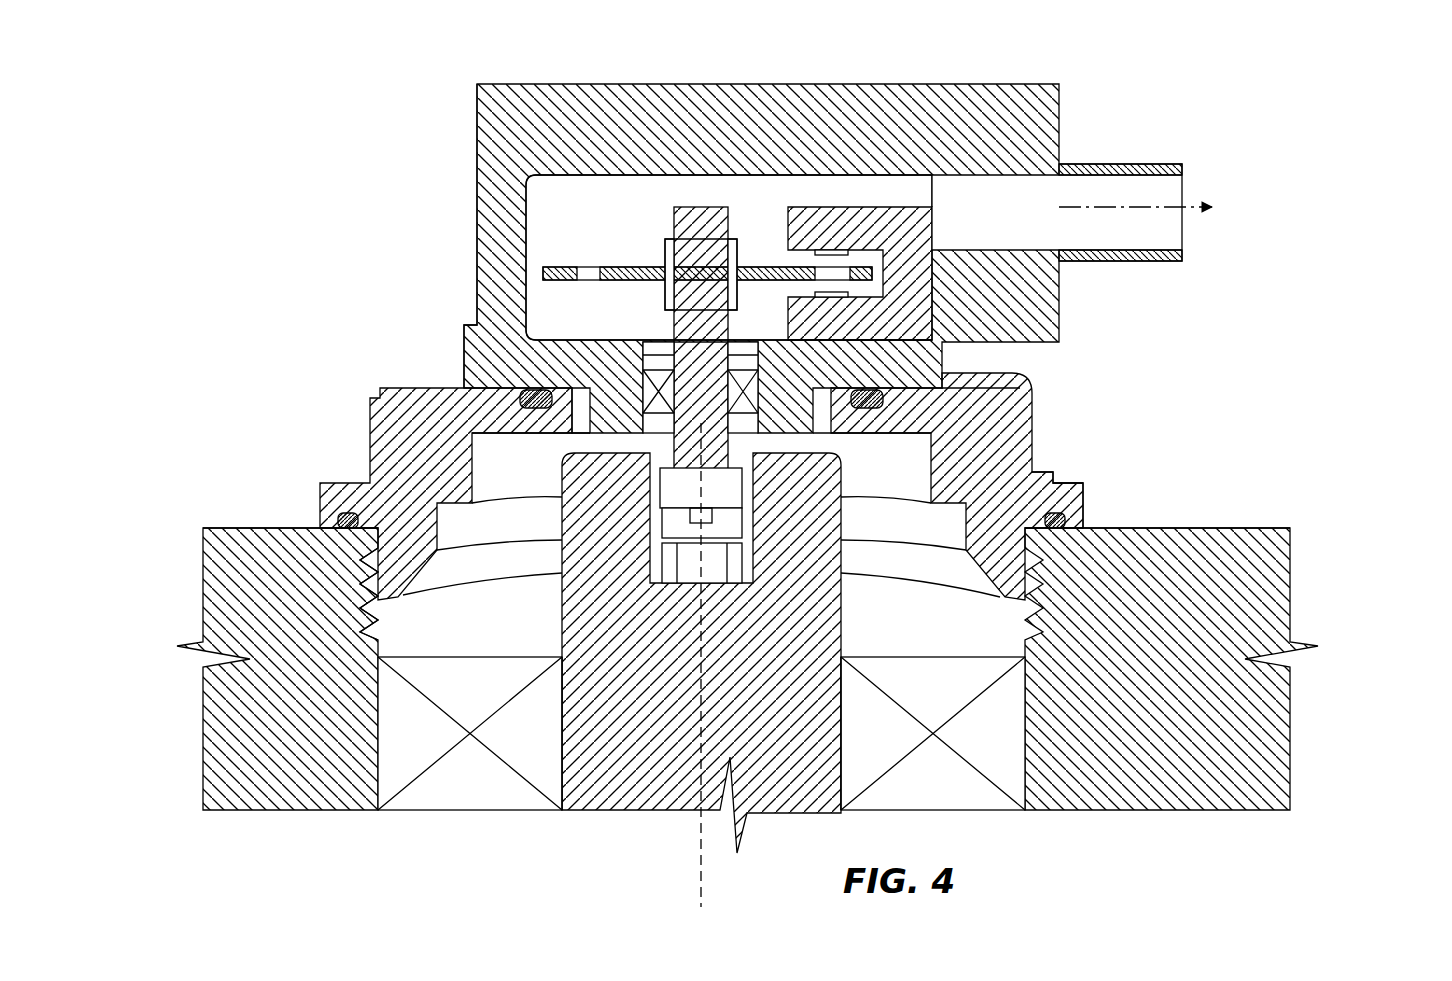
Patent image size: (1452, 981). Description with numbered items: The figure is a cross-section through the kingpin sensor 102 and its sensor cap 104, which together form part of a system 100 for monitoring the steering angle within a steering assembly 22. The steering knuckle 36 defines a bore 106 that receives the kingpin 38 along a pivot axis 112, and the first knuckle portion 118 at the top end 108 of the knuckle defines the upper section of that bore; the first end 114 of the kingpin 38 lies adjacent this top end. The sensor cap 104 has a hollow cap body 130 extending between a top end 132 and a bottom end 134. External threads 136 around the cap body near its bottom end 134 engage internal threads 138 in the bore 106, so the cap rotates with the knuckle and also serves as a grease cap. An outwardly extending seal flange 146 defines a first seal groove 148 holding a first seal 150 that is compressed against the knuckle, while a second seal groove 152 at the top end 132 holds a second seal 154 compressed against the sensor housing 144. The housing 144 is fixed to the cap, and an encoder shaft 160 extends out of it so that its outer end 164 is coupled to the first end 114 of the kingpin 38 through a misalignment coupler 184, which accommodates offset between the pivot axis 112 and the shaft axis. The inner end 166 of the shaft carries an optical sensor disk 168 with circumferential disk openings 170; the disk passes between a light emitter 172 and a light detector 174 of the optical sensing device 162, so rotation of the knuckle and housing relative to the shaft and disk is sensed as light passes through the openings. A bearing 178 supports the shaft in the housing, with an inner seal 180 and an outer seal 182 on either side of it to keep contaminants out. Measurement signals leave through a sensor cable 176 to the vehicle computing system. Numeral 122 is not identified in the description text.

The system 100 is at (253, 148).
The kingpin sensor 102 is at (458, 80).
The sensor cap 104 is at (350, 378).
The bore 106 is at (525, 621).
The top end 108 is at (1160, 527).
The pivot axis 112 is at (702, 877).
The first end 114 is at (841, 448).
The first knuckle portion 118 is at (1155, 790).
The coil 122 is at (460, 793).
The cap body 130 is at (365, 420).
The top end 132 is at (1000, 385).
The bottom end 134 is at (878, 573).
The external threads 136 is at (345, 515).
The internal threads 138 is at (372, 627).
The sensor housing 144 is at (497, 227).
The seal flange 146 is at (1056, 480).
The first seal groove 148 is at (1075, 500).
The first seal 150 is at (1062, 520).
The second seal groove 152 is at (530, 400).
The second seal 154 is at (530, 390).
The encoder shaft 160 is at (672, 225).
The optical sensing device 162 is at (872, 204).
The outer end 164 is at (742, 510).
The inner end 166 is at (718, 207).
The optical sensor disk 168 is at (613, 267).
The disk openings 170 is at (560, 268).
The light emitter 172 is at (830, 297).
The light detector 174 is at (830, 250).
The sensor cable 176 is at (1122, 200).
The bearing 178 is at (640, 385).
The inner seal 180 is at (745, 370).
The outer seal 182 is at (660, 435).
The misalignment coupler 184 is at (658, 530).
The steering assembly 22 is at (180, 487).
The steering knuckle 36 is at (200, 712).
The kingpin 38 is at (622, 773).